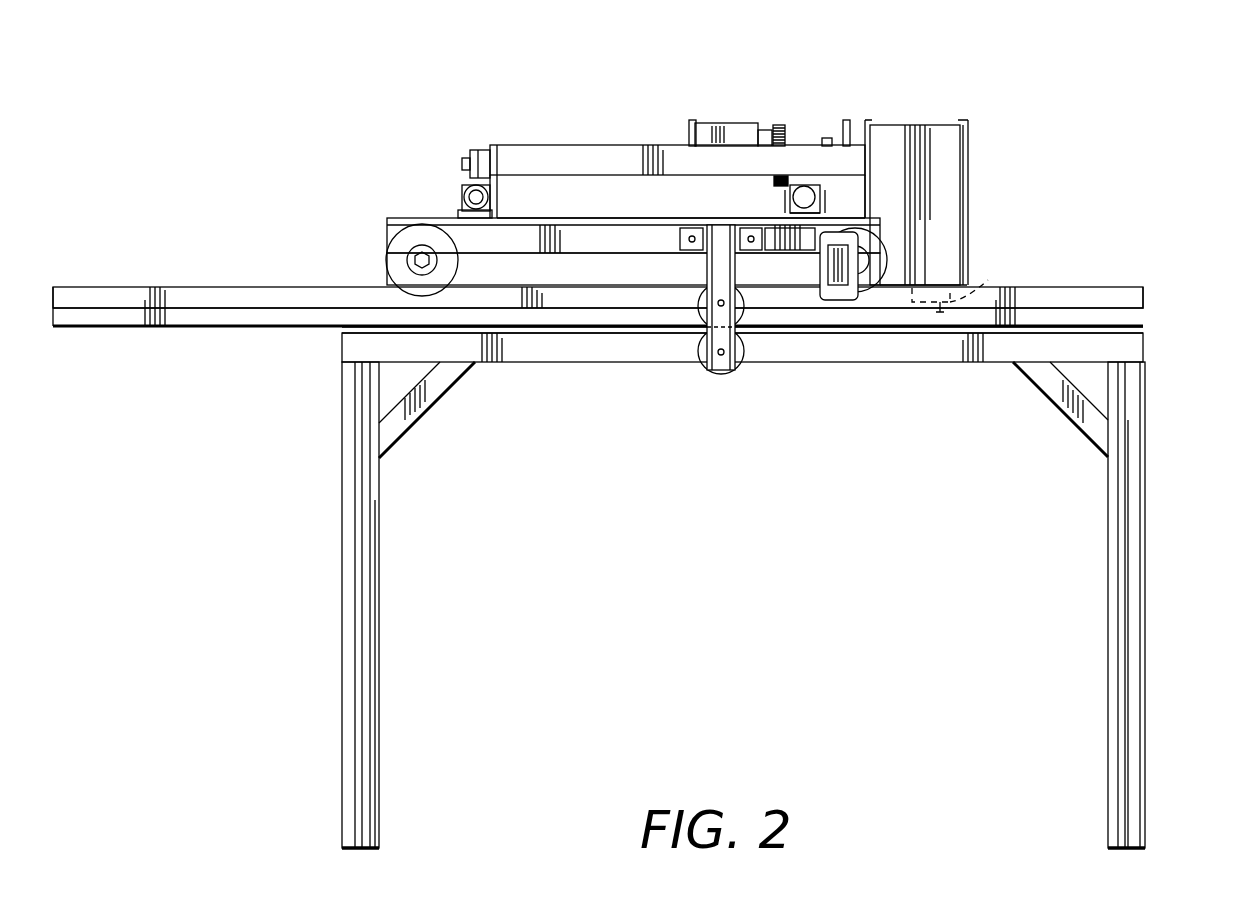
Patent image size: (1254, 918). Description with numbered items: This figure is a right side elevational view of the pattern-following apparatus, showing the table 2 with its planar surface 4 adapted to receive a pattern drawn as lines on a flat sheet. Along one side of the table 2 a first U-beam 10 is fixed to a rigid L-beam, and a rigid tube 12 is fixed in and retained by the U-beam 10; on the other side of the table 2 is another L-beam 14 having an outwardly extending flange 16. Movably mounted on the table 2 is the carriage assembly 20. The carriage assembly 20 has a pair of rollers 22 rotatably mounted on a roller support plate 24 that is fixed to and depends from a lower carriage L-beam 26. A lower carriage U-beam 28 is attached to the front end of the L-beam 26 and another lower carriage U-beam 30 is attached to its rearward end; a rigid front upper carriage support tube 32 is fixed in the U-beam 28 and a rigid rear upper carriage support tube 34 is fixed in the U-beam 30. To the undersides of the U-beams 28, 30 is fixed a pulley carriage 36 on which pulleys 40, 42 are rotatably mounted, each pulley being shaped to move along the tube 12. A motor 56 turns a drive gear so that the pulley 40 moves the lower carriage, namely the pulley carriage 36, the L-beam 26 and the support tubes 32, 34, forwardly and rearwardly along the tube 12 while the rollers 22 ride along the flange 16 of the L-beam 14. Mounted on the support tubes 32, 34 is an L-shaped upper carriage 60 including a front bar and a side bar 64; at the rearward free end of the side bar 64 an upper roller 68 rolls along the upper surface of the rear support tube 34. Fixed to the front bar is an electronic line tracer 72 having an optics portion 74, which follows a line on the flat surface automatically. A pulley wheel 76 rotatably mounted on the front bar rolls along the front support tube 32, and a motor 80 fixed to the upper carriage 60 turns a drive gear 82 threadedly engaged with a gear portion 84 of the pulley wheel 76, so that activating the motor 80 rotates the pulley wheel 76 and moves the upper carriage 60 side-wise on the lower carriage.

The table 2 is at (897, 355).
The planar surface 4 is at (1062, 323).
The first U-beam 10 is at (121, 330).
The rigid tube 12 is at (157, 287).
The L-beam 14 is at (345, 355).
The flange 16 is at (350, 332).
The carriage assembly 20 is at (460, 78).
The rollers 22 is at (705, 330).
The roller support plate 24 is at (722, 372).
The lower carriage L-beam 26 is at (645, 249).
The lower carriage U-beam 28 is at (832, 218).
The lower carriage U-beam 30 is at (460, 212).
The front upper carriage support tube 32 is at (821, 197).
The rear upper carriage support tube 34 is at (464, 188).
The pulley carriage 36 is at (602, 279).
The pulley 40 is at (889, 262).
The pulley 42 is at (405, 260).
The motor 56 is at (826, 268).
The upper carriage 60 is at (650, 145).
The side bar 64 is at (580, 145).
The upper roller 68 is at (480, 148).
The electronic line tracer 72 is at (897, 135).
The optics portion 74 is at (985, 285).
The pulley wheel 76 is at (827, 138).
The motor 80 is at (730, 122).
The drive gear 82 is at (778, 124).
The gear portion 84 is at (775, 183).